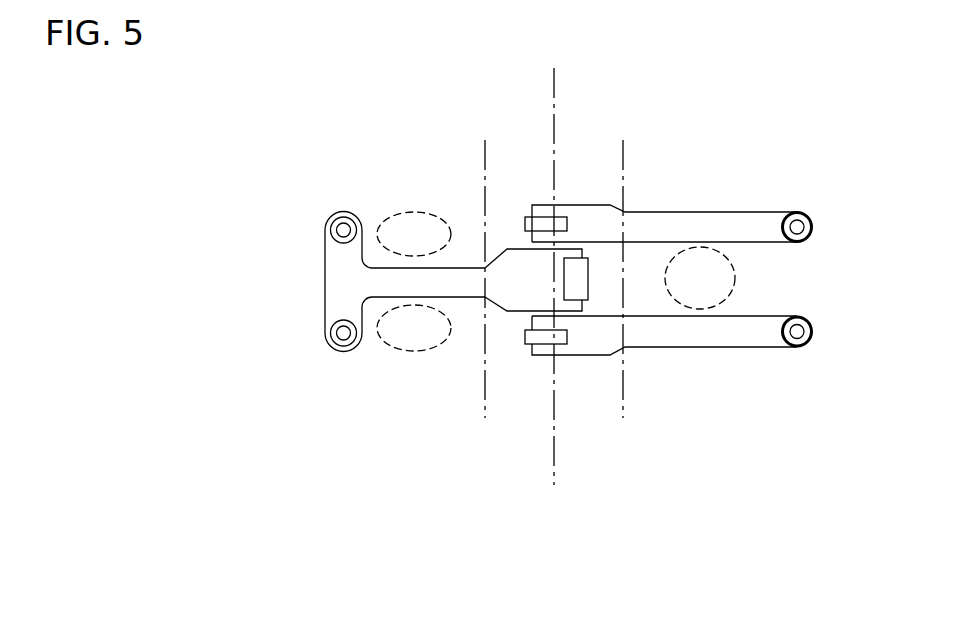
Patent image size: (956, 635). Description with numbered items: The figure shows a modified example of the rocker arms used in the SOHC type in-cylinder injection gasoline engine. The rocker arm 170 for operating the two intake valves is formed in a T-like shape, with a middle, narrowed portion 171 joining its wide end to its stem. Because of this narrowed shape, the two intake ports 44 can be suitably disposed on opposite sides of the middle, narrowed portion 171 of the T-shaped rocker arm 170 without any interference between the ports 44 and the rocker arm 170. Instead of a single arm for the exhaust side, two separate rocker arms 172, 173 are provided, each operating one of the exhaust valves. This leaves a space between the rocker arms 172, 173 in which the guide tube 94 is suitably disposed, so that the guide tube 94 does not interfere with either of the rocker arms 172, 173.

The intake port 44 is at (395, 212).
The guide tube 94 is at (735, 275).
The rocker arm 170 is at (318, 266).
The middle, narrowed portion 171 is at (472, 266).
The rocker arm 172 is at (732, 208).
The rocker arm 173 is at (737, 347).